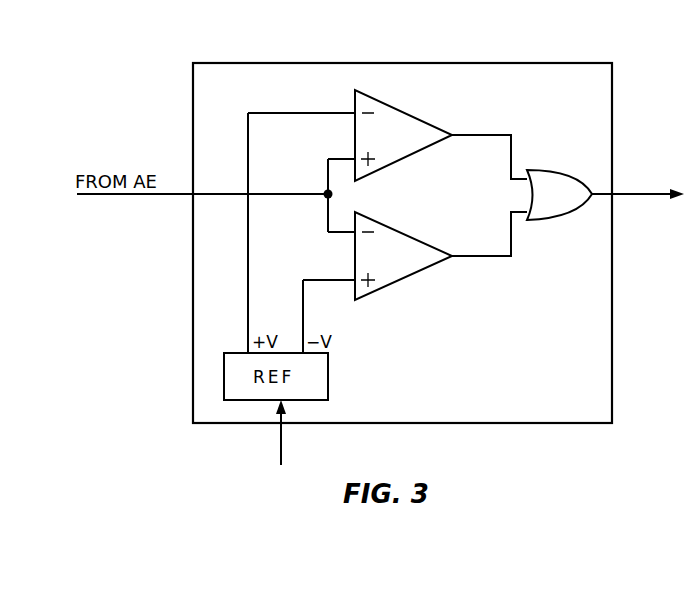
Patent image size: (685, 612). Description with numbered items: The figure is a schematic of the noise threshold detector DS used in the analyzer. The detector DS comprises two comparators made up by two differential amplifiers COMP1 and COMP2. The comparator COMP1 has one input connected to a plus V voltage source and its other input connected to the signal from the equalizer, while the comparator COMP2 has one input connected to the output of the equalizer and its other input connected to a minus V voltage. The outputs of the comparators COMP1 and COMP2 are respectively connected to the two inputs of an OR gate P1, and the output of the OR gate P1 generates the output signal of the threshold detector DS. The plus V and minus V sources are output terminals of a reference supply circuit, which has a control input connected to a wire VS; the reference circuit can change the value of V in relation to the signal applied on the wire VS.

The noise threshold detector DS is at (612, 388).
The comparator COMP1 is at (420, 120).
The comparator COMP2 is at (404, 278).
The OR gate P1 is at (548, 219).
The wire VS is at (276, 452).